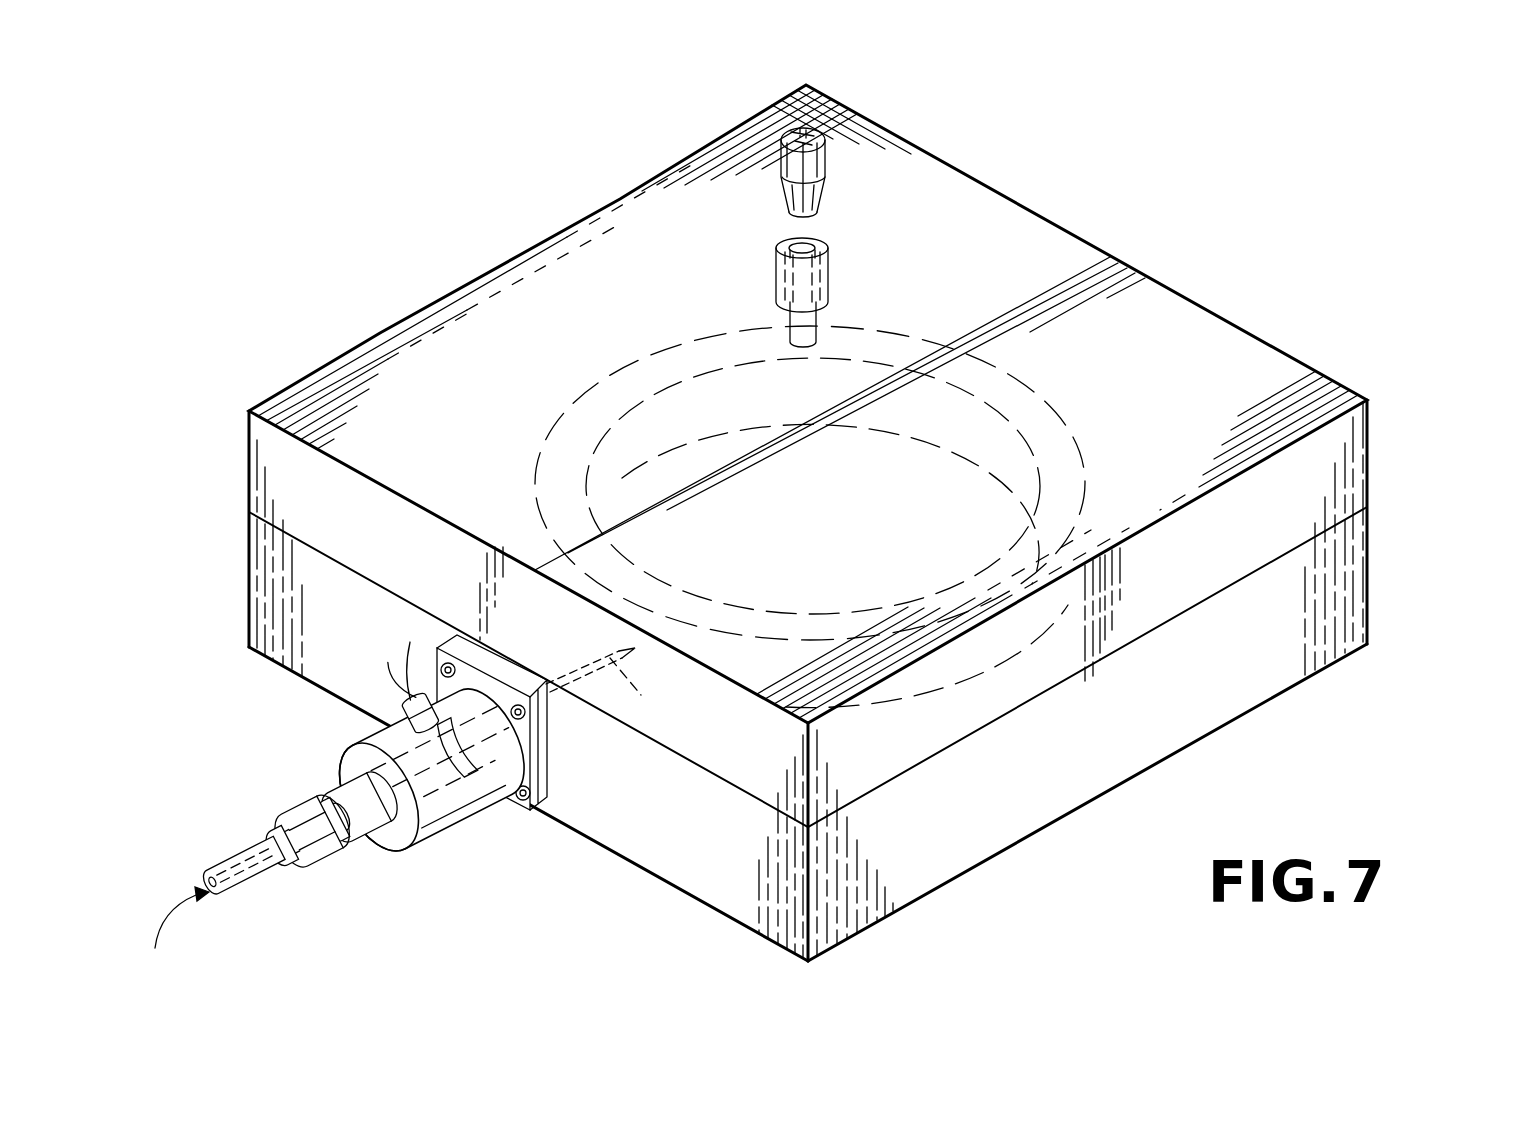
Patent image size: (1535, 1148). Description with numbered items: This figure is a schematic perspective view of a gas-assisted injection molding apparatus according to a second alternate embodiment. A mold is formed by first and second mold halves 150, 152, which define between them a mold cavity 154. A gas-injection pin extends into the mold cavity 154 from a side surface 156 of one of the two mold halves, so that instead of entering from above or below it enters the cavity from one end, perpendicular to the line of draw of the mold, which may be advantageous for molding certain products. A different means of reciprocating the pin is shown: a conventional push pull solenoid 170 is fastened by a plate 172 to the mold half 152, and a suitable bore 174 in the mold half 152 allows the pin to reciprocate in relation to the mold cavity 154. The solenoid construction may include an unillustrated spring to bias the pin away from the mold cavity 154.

The first mold half 150 is at (1318, 478).
The second mold half 152 is at (1325, 568).
The mold cavity 154 is at (1058, 402).
The side surface 156 is at (603, 828).
The push pull solenoid 170 is at (440, 807).
The plate 172 is at (475, 652).
The bore 174 is at (560, 668).